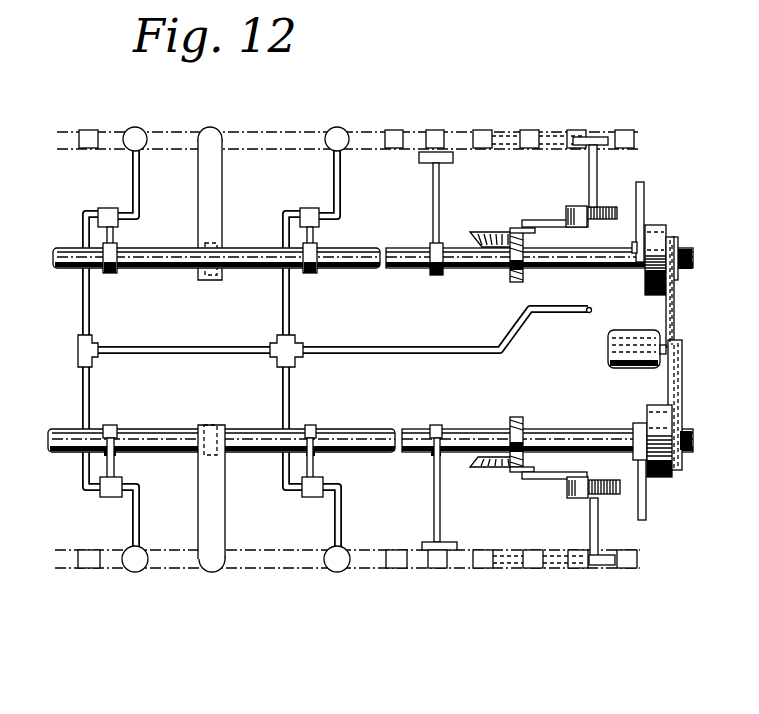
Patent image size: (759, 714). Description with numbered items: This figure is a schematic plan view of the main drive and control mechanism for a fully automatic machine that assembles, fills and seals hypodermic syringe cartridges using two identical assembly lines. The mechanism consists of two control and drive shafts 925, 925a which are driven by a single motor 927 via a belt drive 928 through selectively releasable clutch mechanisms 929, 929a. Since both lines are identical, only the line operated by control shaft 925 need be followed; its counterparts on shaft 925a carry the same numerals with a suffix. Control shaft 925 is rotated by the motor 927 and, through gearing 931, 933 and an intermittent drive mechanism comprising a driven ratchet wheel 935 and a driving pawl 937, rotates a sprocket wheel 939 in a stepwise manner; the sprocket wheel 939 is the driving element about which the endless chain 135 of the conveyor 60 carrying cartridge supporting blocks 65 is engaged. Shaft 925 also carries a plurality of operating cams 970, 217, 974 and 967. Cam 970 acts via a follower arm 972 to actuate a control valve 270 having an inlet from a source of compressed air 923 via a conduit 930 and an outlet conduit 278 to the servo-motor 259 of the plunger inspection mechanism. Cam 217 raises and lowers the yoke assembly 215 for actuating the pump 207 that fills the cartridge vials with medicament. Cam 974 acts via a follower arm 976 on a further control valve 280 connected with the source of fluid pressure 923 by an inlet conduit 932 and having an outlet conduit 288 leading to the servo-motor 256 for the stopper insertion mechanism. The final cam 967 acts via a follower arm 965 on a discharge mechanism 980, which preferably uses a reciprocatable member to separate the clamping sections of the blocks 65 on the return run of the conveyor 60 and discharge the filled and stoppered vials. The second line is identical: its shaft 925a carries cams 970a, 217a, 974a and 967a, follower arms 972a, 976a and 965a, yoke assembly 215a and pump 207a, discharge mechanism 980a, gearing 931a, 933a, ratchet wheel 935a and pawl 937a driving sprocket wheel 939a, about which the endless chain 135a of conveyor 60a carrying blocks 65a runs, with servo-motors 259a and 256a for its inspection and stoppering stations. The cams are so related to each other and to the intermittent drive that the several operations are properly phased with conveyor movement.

The conveyor 60a is at (56, 140).
The conveyor 60 is at (56, 552).
The blocks 65a is at (90, 130).
The blocks 65 is at (86, 568).
The endless chain 135a is at (548, 132).
The endless chain 135 is at (562, 567).
The servo-motor 259a is at (140, 134).
The servo-motor 259 is at (132, 565).
The pump 207a is at (215, 134).
The pump 207 is at (211, 566).
The servo-motor 256a is at (340, 132).
The servo-motor 256 is at (342, 550).
The yoke assembly 215a is at (210, 214).
The yoke assembly 215 is at (216, 516).
The cam 217a is at (212, 275).
The cam 217 is at (214, 425).
The control and drive shaft 925a is at (385, 267).
The control and drive shaft 925 is at (392, 451).
The follower arm 972a is at (114, 237).
The follower arm 972 is at (114, 470).
The cam 970a is at (112, 273).
The cam 970 is at (112, 425).
The follower arm 976a is at (315, 237).
The follower arm 976 is at (313, 470).
The cam 974a is at (310, 273).
The cam 974 is at (314, 425).
The discharge mechanism 980a is at (453, 158).
The discharge mechanism 980 is at (430, 543).
The follower arm 965a is at (440, 192).
The follower arm 965 is at (441, 522).
The cam 967a is at (443, 270).
The cam 967 is at (442, 425).
The gearing 933a is at (482, 231).
The gearing 933 is at (488, 468).
The gearing 931a is at (523, 270).
The gearing 931 is at (523, 420).
The driving pawl 937a is at (574, 208).
The driving pawl 937 is at (578, 497).
The driven ratchet wheel 935a is at (604, 220).
The driven ratchet wheel 935 is at (600, 480).
The sprocket wheel 939a is at (598, 140).
The sprocket wheel 939 is at (603, 562).
The clutch mechanism 929a is at (656, 232).
The clutch mechanism 929 is at (668, 478).
The belt drive 928 is at (683, 378).
The motor 927 is at (628, 370).
The source of compressed air 923 is at (592, 311).
The conduit 930 is at (89, 374).
The inlet conduit 932 is at (290, 374).
The control valve 270 is at (112, 496).
The outlet conduit 278 is at (139, 512).
The control valve 280 is at (307, 501).
The outlet conduit 288 is at (342, 500).